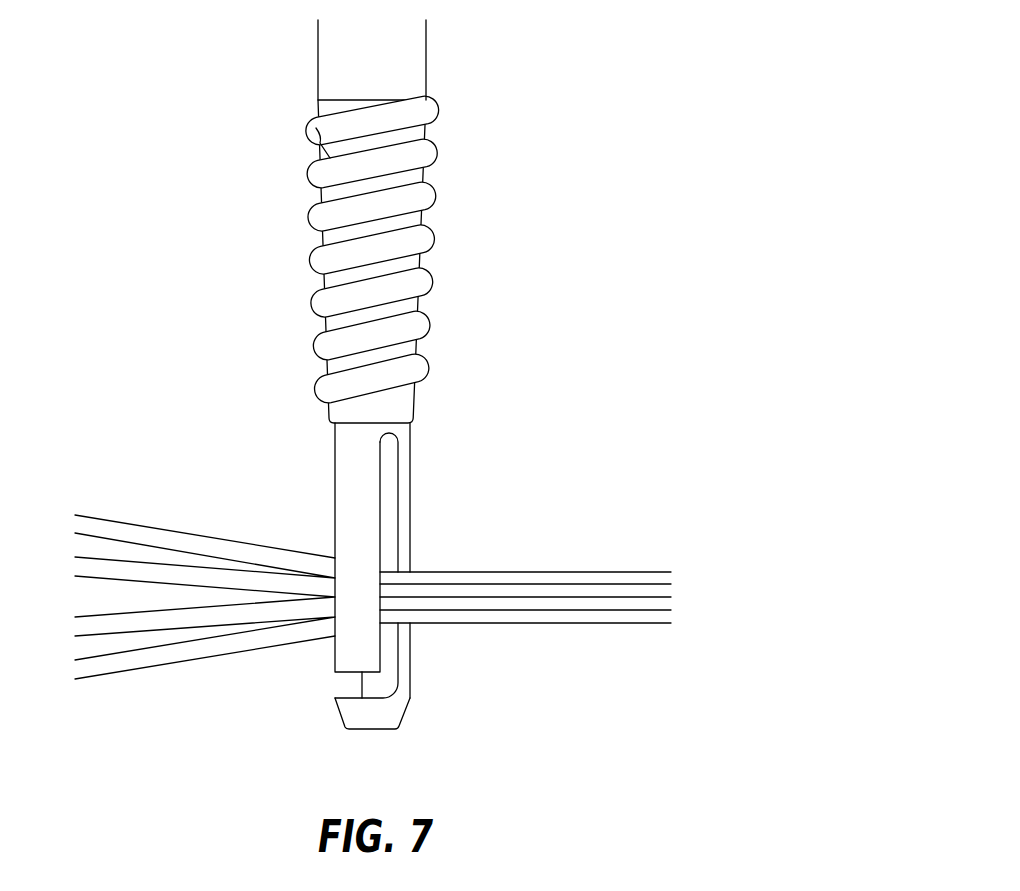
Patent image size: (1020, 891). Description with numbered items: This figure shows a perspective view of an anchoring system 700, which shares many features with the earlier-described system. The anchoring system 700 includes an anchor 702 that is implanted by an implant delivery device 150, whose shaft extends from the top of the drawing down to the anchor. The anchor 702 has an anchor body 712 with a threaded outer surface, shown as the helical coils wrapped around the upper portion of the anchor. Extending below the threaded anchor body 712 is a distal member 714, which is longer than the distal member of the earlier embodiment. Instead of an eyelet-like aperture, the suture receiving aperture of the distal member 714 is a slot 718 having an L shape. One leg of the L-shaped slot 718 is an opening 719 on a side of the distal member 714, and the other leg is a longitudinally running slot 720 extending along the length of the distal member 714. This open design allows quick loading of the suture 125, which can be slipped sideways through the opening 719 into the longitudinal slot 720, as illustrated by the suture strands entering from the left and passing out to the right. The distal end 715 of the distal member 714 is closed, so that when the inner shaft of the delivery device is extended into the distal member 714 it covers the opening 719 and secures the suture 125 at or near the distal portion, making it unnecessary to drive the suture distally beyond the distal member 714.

The anchoring system 700 is at (176, 55).
The implant delivery device 150 is at (413, 63).
The anchor body 712 is at (311, 136).
The anchor 702 is at (438, 471).
The distal member 714 is at (352, 462).
The longitudinally running slot 720 is at (382, 549).
The slot 718 is at (385, 652).
The distal end 715 is at (372, 731).
The opening 719 is at (331, 550).
The suture 125 is at (562, 588).